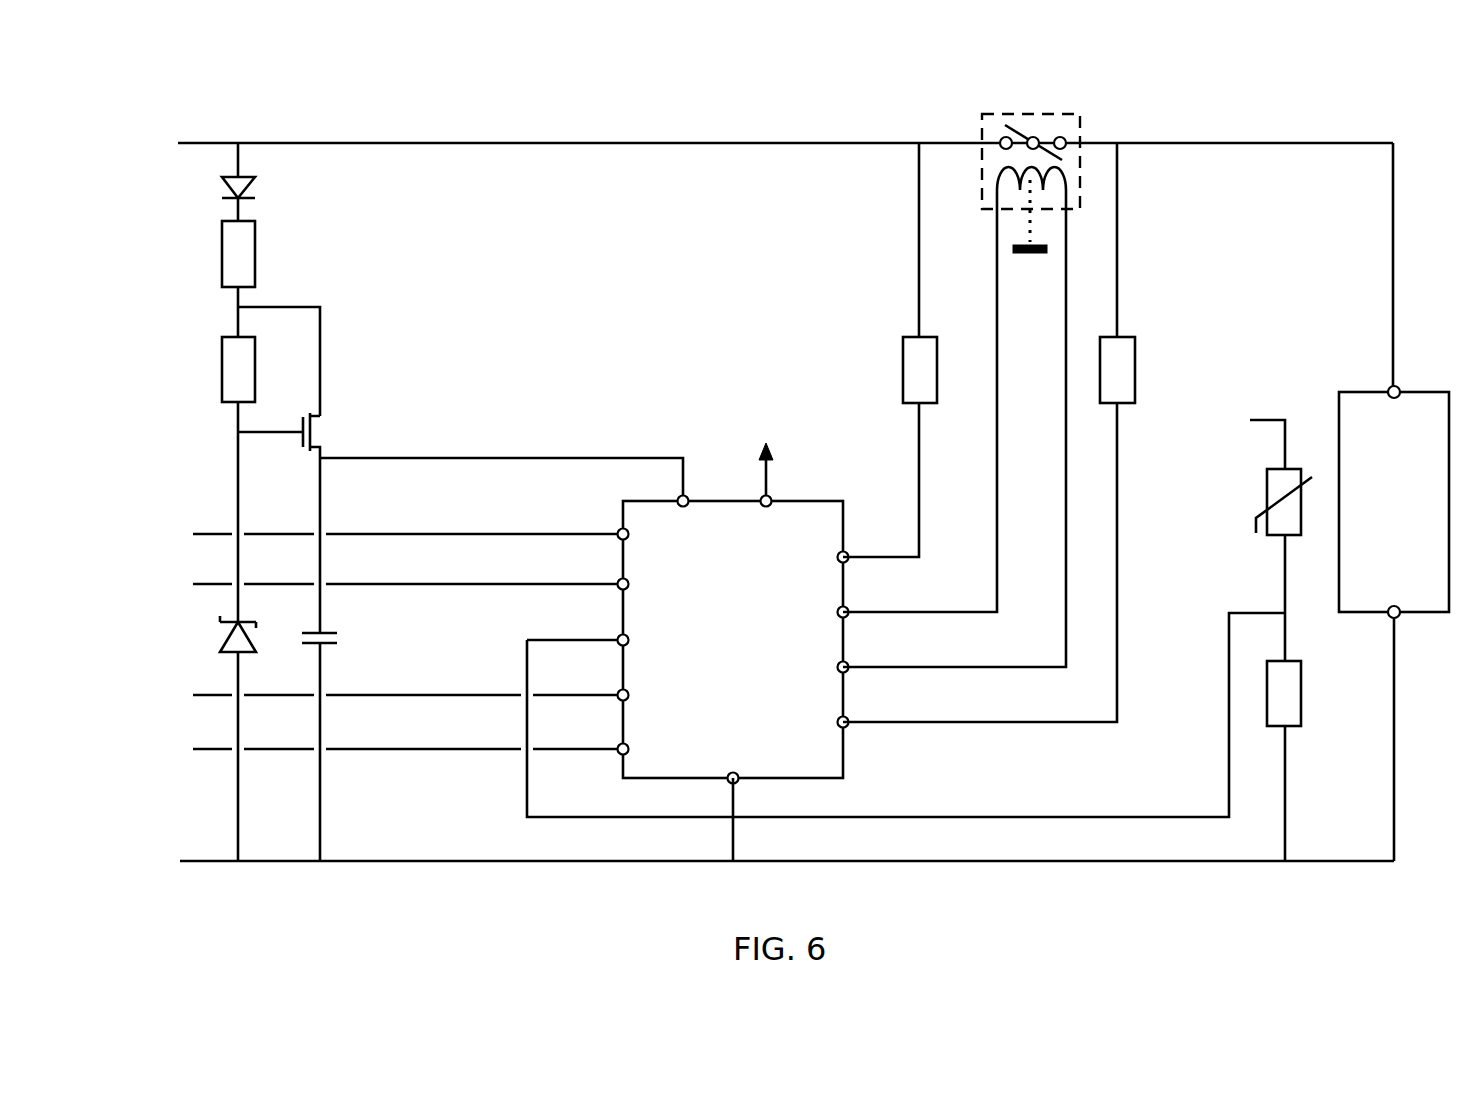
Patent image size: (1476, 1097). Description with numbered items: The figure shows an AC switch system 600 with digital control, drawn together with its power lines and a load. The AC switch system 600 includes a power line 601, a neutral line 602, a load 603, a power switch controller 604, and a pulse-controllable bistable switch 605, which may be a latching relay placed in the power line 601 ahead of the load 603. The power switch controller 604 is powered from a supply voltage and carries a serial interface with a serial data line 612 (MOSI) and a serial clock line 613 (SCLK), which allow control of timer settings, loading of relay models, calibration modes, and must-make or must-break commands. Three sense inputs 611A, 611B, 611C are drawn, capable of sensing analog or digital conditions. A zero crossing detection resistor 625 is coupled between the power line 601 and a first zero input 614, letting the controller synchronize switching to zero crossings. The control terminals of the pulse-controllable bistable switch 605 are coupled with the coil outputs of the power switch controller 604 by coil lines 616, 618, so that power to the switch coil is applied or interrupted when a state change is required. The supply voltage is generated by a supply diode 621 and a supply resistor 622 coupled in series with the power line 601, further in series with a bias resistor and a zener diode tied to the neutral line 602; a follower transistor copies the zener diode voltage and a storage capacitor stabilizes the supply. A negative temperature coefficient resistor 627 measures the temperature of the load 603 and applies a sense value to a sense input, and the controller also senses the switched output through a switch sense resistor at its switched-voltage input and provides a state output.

The AC switch system 600 is at (226, 78).
The power line 601 is at (203, 142).
The neutral line 602 is at (205, 873).
The load 603 is at (1394, 502).
The power switch controller 604 is at (735, 640).
The pulse-controllable bistable switch 605 is at (1003, 112).
The sense input 611A is at (413, 531).
The sense input 611B is at (413, 581).
The sense input 611C is at (540, 637).
The serial data line 612 is at (413, 692).
The serial clock line 613 is at (413, 747).
The first zero input 614 is at (928, 546).
The coil A drive line 616 is at (931, 618).
The coil B drive line 618 is at (931, 672).
The supply diode 621 is at (217, 205).
The supply resistor 622 is at (217, 272).
The zero crossing detection resistor 625 is at (943, 370).
The negative temperature coefficient resistor 627 is at (1258, 481).